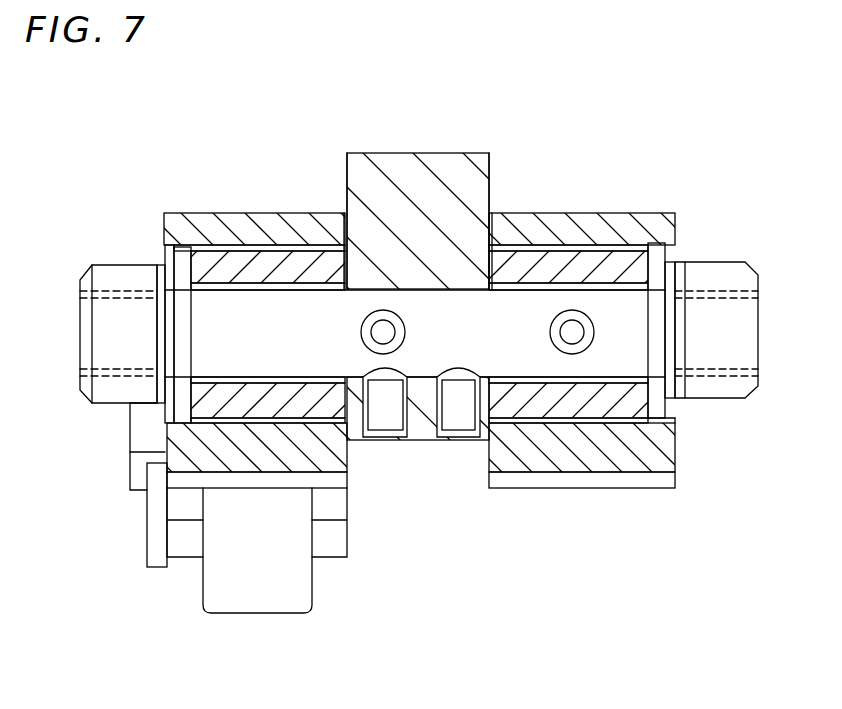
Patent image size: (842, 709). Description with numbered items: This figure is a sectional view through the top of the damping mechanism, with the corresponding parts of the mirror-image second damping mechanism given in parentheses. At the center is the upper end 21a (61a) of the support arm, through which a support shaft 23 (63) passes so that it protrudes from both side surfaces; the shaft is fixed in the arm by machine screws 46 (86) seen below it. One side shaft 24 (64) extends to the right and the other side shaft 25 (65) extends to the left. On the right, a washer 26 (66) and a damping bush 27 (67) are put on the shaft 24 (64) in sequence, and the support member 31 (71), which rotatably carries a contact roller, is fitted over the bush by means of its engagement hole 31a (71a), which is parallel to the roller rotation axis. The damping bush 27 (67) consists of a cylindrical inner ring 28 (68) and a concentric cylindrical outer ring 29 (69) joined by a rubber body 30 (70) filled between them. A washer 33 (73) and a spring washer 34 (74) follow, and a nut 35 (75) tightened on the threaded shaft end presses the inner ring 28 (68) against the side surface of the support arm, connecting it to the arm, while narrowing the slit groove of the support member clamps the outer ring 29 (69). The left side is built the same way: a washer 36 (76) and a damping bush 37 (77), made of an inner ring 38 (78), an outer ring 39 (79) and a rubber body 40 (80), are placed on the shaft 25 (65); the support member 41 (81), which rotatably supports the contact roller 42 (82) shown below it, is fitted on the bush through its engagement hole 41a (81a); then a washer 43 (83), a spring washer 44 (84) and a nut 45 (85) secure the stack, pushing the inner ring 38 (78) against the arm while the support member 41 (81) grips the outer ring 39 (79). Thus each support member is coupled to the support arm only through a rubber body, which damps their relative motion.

The upper end of support arm 21a is at (410, 152).
The upper end of support arm 61a is at (406, 247).
The support shaft 23 is at (323, 292).
The support shaft 63 is at (245, 176).
The side shaft 24 is at (543, 295).
The side shaft 64 is at (565, 222).
The side shaft 25 is at (273, 300).
The side shaft 65 is at (268, 229).
The washer 26 is at (493, 273).
The washer 66 is at (491, 196).
The damping bush 27 is at (600, 425).
The damping bush 67 is at (559, 459).
The inner ring 28 is at (608, 437).
The inner ring 68 is at (608, 480).
The outer ring 29 is at (585, 408).
The outer ring 69 is at (582, 478).
The rubber body 30 is at (585, 410).
The rubber body 70 is at (567, 504).
The support member 31 is at (592, 218).
The support member 71 is at (565, 179).
The engagement hole 31a is at (618, 410).
The engagement hole 71a is at (672, 509).
The washer 33 is at (657, 247).
The washer 73 is at (649, 286).
The spring washer 34 is at (680, 267).
The spring washer 74 is at (692, 260).
The nut 35 is at (733, 263).
The nut 75 is at (717, 285).
The washer 36 is at (345, 235).
The washer 76 is at (344, 196).
The damping bush 37 is at (240, 432).
The damping bush 77 is at (237, 526).
The inner ring 38 is at (178, 428).
The inner ring 78 is at (218, 508).
The outer ring 39 is at (283, 420).
The outer ring 79 is at (286, 514).
The rubber body 40 is at (303, 402).
The rubber body 80 is at (278, 465).
The support member 41 is at (232, 225).
The support member 81 is at (245, 268).
The engagement hole 41a is at (218, 414).
The engagement hole 81a is at (162, 524).
The contact roller 42 is at (262, 612).
The contact roller 82 is at (264, 567).
The washer 43 is at (178, 246).
The washer 83 is at (185, 288).
The spring washer 44 is at (160, 268).
The spring washer 84 is at (140, 263).
The nut 45 is at (110, 273).
The nut 85 is at (118, 293).
The machine screws 46 is at (385, 420).
The machine screws 86 is at (421, 443).